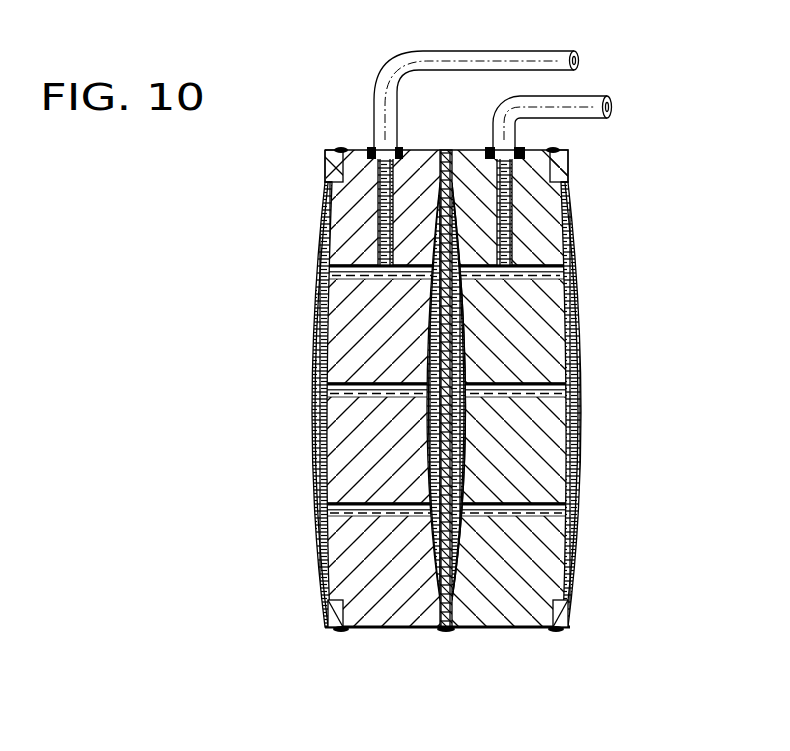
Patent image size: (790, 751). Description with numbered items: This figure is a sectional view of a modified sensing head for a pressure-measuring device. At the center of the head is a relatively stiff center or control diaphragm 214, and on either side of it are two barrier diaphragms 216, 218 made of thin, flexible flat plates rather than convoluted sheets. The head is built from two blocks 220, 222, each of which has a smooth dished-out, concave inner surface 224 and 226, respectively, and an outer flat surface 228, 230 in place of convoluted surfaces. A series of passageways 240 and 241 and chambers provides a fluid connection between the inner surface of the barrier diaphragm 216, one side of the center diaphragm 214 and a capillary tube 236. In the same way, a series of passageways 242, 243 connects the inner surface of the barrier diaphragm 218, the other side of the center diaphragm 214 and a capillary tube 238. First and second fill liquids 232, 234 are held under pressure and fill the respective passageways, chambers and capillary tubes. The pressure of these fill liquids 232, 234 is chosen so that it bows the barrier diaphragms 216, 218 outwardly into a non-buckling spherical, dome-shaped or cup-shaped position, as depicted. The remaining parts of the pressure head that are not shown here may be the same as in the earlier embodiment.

The center diaphragm 214 is at (460, 360).
The barrier diaphragm 216 is at (320, 382).
The barrier diaphragm 218 is at (576, 330).
The block 220 is at (410, 620).
The block 222 is at (527, 620).
The concave inner surface 224 is at (430, 418).
The concave inner surface 226 is at (466, 430).
The outer flat surface 228 is at (318, 310).
The outer flat surface 230 is at (565, 300).
The first fill liquid 232 is at (437, 328).
The second fill liquid 234 is at (462, 452).
The capillary tube 236 is at (514, 51).
The capillary tube 238 is at (588, 95).
The passageway 240 is at (355, 243).
The passageway 241 is at (393, 192).
The passageway 242 is at (481, 262).
The passageway 243 is at (503, 228).